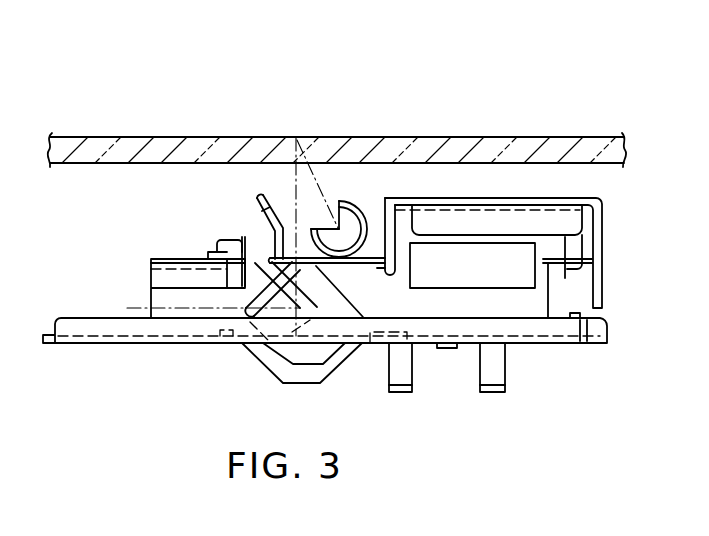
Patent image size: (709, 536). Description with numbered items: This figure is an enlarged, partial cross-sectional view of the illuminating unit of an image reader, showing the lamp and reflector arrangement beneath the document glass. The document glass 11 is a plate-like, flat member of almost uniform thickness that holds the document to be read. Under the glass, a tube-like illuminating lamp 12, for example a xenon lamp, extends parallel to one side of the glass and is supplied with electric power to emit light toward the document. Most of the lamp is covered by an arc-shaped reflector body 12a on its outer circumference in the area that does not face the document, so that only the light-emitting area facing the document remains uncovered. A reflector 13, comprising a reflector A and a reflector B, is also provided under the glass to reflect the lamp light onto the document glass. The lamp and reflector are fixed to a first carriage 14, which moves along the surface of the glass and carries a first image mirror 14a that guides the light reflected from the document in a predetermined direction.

The document glass 11 is at (456, 149).
The illuminating lamp 12 is at (349, 200).
The reflector body 12a is at (366, 213).
The reflector 13 is at (256, 191).
The first carriage 14 is at (609, 198).
The first image mirror 14a is at (266, 347).
The reflector A is at (258, 208).
The reflector B is at (268, 223).